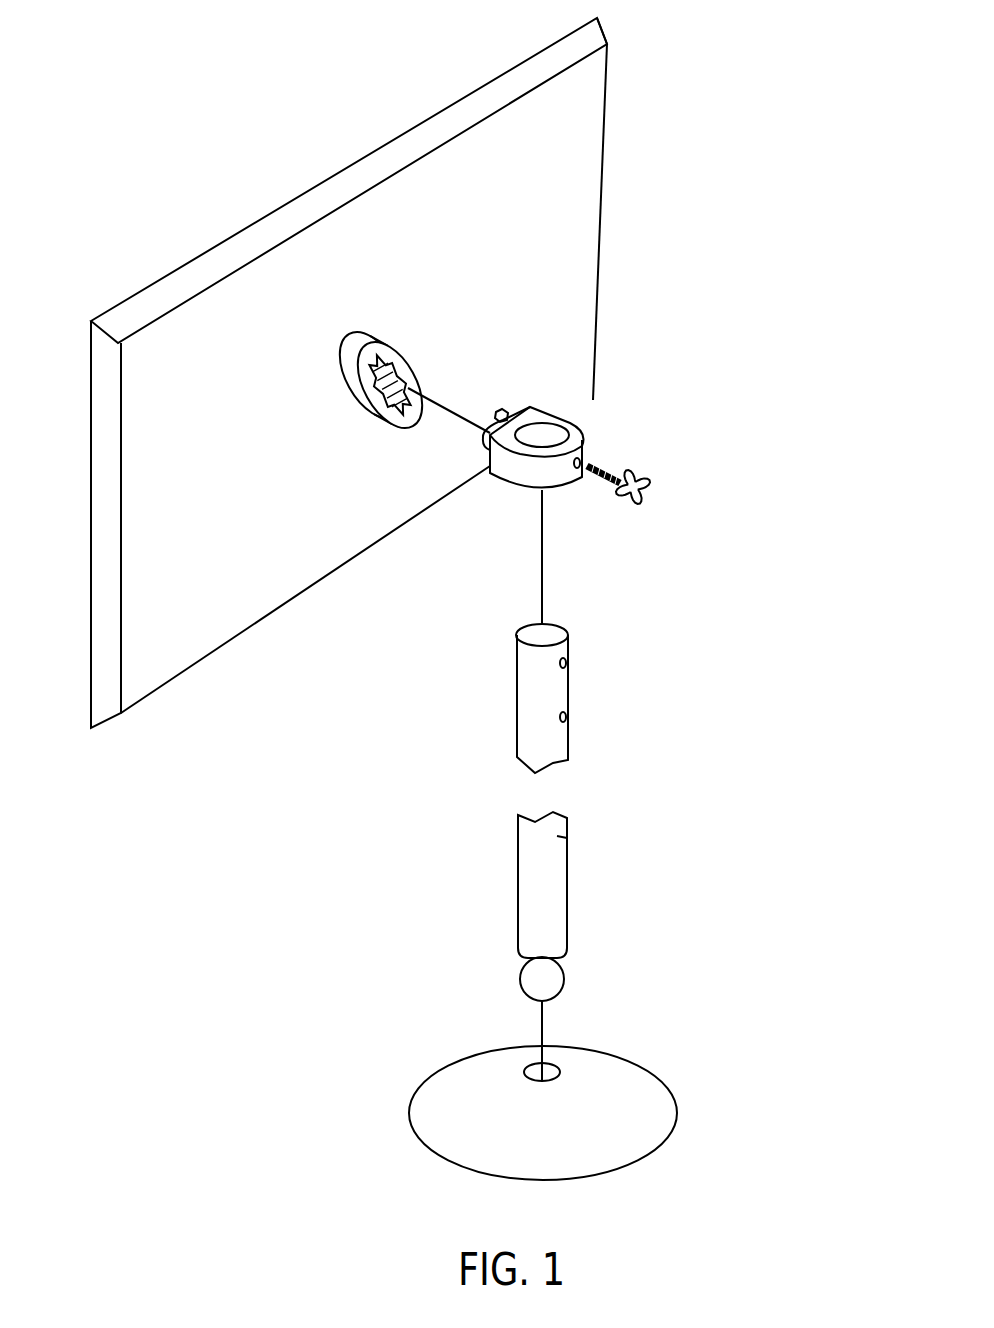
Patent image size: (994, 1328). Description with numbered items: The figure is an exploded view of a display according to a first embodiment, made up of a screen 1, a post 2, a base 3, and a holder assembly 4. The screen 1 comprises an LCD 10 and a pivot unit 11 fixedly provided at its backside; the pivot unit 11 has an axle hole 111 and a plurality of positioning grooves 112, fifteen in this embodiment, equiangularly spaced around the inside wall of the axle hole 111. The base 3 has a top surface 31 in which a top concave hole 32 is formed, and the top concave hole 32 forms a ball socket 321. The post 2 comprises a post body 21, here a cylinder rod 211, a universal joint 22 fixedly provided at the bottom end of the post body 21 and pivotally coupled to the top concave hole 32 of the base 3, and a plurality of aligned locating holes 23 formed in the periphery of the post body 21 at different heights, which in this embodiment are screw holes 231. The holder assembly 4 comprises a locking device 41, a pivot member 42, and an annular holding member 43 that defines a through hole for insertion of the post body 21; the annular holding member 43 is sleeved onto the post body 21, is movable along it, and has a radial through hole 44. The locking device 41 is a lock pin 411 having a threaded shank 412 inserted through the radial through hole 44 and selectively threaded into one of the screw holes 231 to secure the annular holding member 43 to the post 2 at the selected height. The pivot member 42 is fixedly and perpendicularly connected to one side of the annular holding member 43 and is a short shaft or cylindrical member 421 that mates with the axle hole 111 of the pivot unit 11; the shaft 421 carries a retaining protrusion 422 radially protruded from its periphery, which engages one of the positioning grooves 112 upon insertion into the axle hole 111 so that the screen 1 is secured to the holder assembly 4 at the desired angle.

The screen 1 is at (602, 30).
The LCD 10 is at (602, 31).
The pivot unit 11 is at (334, 108).
The axle hole 111 is at (372, 355).
The positioning grooves 112 is at (395, 345).
The post 2 is at (670, 703).
The post body 21 is at (589, 885).
The cylinder rod 211 is at (558, 838).
The universal joint 22 is at (587, 1006).
The locating holes 23 is at (591, 698).
The screw holes 231 is at (568, 717).
The base 3 is at (744, 1022).
The top surface 31 is at (658, 1103).
The top concave hole 32 is at (633, 1044).
The ball socket 321 is at (552, 1072).
The holder assembly 4 is at (774, 320).
The locking device 41 is at (678, 472).
The lock pin 411 is at (603, 474).
The threaded shank 412 is at (616, 478).
The pivot member 42 is at (692, 283).
The shaft 421 is at (560, 433).
The retaining protrusion 422 is at (503, 415).
The annular holding member 43 is at (565, 432).
The radial through hole 44 is at (585, 462).